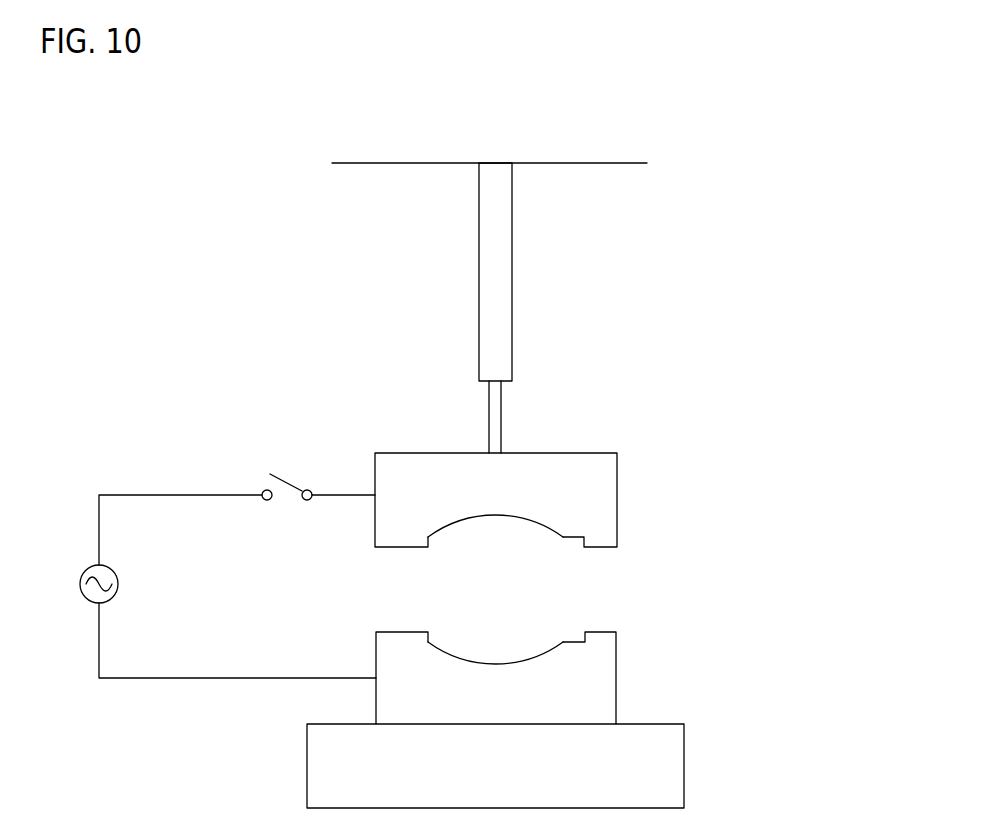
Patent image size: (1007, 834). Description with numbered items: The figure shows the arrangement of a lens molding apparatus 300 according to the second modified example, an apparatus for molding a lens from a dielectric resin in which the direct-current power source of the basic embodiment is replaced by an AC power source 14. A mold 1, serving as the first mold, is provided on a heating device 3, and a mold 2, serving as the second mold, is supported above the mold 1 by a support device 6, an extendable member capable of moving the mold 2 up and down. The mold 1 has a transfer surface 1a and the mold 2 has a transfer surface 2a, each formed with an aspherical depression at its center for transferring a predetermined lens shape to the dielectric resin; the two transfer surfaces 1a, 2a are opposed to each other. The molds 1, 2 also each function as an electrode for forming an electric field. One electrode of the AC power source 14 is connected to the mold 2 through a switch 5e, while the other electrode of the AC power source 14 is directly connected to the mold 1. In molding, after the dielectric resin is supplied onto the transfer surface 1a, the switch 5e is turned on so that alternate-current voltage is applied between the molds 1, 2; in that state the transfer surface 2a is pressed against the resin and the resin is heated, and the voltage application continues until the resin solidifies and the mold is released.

The lens molding apparatus 300 is at (605, 100).
The support device 6 is at (512, 313).
The mold 2 is at (518, 515).
The transfer surface 2a is at (500, 527).
The mold 1 is at (517, 665).
The transfer surface 1a is at (500, 650).
The heating device 3 is at (684, 772).
The AC power source 14 is at (115, 572).
The switch 5e is at (287, 482).